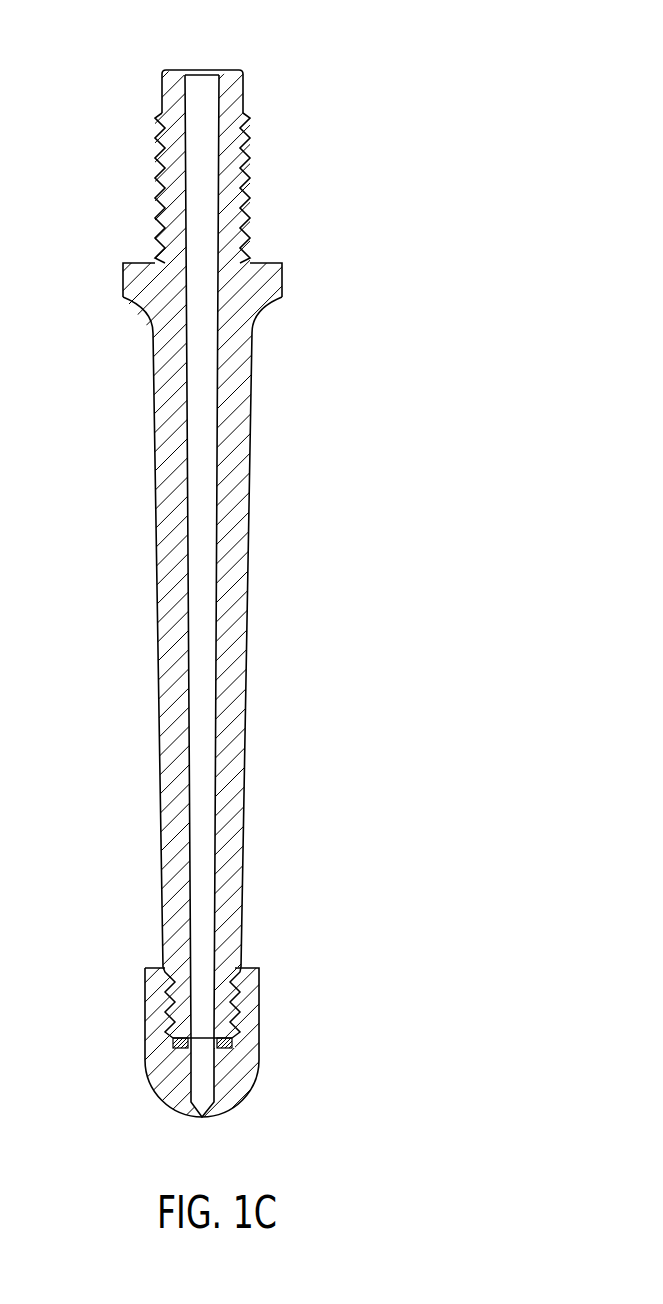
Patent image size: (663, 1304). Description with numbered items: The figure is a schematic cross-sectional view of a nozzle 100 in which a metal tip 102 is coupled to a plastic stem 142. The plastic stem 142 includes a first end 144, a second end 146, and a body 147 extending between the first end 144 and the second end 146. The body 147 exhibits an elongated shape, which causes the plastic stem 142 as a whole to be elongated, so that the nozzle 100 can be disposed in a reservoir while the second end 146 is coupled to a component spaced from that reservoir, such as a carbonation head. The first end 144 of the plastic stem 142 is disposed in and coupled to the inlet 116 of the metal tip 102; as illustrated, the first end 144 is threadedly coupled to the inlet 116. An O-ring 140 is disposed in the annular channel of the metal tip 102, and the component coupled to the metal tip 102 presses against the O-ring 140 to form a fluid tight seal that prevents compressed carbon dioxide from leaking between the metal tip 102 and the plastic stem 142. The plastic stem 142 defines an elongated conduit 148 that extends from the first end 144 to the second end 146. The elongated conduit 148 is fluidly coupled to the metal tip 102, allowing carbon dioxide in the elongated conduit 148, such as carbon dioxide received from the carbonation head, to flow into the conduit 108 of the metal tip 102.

The nozzle 100 is at (249, 44).
The metal tip 102 is at (263, 1046).
The conduit 108 is at (214, 1074).
The inlet 116 is at (161, 1001).
The O-ring 140 is at (175, 1045).
The plastic stem 142 is at (252, 492).
The first end 144 is at (240, 997).
The second end 146 is at (252, 162).
The body 147 is at (248, 634).
The elongated conduit 148 is at (198, 709).